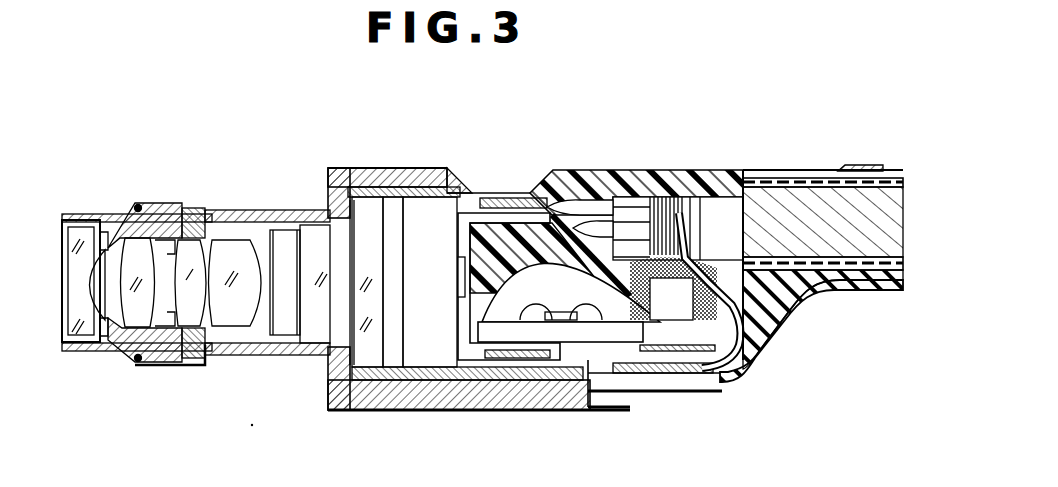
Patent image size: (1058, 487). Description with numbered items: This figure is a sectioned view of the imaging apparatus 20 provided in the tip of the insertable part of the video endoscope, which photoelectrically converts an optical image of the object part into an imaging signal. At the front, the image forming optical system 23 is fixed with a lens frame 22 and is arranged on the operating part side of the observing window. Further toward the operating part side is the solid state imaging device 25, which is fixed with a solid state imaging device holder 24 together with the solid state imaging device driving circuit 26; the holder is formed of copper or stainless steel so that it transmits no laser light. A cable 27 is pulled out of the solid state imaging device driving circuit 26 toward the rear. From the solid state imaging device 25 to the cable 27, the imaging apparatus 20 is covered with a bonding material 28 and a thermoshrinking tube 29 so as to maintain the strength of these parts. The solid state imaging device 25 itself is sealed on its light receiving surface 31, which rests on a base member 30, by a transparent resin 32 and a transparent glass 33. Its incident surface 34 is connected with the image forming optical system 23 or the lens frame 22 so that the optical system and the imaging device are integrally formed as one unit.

The imaging apparatus 20 is at (830, 127).
The lens frame 22 is at (118, 350).
The image forming optical system 23 is at (307, 203).
The solid state imaging device holder 24 is at (340, 375).
The solid state imaging device 25 is at (437, 232).
The solid state imaging device driving circuit 26 is at (617, 328).
The cable 27 is at (855, 212).
The bonding material 28 is at (563, 262).
The thermoshrinking tube 29 is at (660, 172).
The base member 30 is at (462, 372).
The light receiving surface 31 is at (392, 360).
The transparent resin 32 is at (410, 360).
The transparent glass 33 is at (355, 358).
The incident surface 34 is at (352, 262).